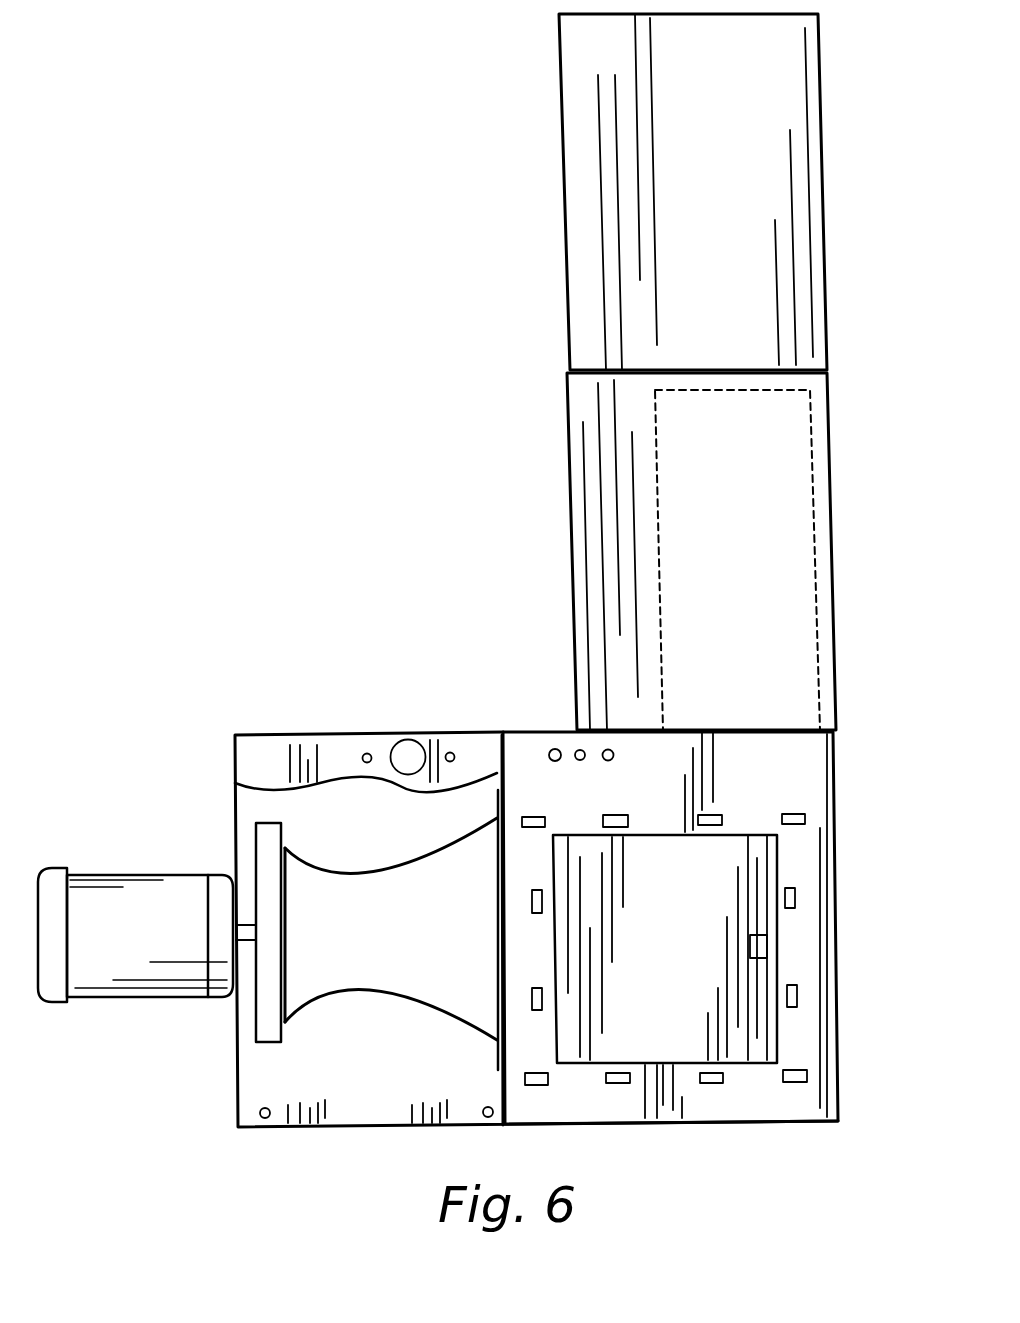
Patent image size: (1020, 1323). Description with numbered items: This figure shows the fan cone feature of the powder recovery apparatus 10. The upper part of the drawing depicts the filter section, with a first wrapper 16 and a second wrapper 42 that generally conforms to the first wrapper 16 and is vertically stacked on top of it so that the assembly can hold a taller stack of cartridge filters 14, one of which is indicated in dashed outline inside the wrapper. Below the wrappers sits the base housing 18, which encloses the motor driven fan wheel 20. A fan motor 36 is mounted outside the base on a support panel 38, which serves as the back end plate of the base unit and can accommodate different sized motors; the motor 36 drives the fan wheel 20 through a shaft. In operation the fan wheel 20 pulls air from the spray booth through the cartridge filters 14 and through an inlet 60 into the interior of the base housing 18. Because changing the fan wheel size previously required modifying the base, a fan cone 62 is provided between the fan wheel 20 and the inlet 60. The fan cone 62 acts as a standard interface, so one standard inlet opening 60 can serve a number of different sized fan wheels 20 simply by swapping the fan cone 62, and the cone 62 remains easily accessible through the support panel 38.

The powder recovery apparatus 10 is at (353, 168).
The cartridge filters 14 is at (722, 470).
The first wrapper 16 is at (833, 535).
The base housing 18 is at (848, 893).
The fan wheel 20 is at (266, 810).
The fan motor 36 is at (148, 873).
The support panel 38 is at (235, 838).
The second wrapper 42 is at (825, 180).
The inlet 60 is at (497, 804).
The fan cone 62 is at (398, 855).